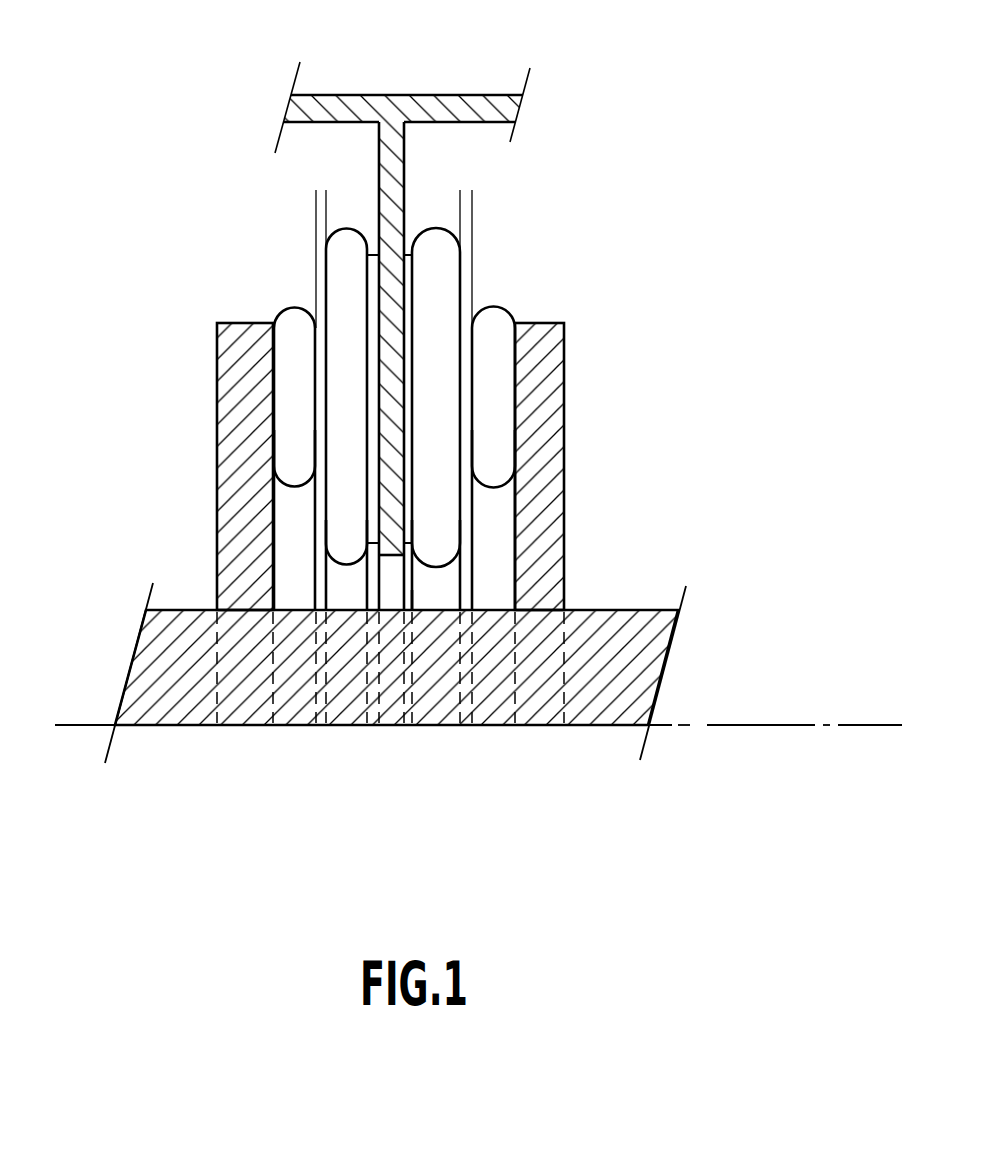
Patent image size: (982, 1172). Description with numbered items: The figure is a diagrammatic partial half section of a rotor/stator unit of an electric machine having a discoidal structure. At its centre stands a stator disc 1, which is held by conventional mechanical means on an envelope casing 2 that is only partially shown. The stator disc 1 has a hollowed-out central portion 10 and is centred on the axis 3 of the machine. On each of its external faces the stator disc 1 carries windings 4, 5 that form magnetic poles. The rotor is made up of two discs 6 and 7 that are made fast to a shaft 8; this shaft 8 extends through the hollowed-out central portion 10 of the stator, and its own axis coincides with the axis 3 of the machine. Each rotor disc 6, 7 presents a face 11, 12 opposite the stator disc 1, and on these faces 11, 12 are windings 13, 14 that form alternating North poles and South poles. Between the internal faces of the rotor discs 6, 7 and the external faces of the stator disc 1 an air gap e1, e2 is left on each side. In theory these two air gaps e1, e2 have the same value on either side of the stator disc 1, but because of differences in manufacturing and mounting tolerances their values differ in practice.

The stator disc 1 is at (405, 163).
The envelope casing 2 is at (460, 108).
The axis of the machine 3 is at (771, 726).
The winding 4 is at (343, 275).
The winding 5 is at (443, 268).
The rotor disc 6 is at (216, 477).
The rotor disc 7 is at (565, 463).
The shaft 8 is at (168, 678).
The central portion 10 is at (437, 586).
The face 11 is at (283, 527).
The face 12 is at (500, 527).
The winding 13 is at (295, 378).
The winding 14 is at (497, 366).
The air gap e1 is at (345, 207).
The air gap e2 is at (442, 207).